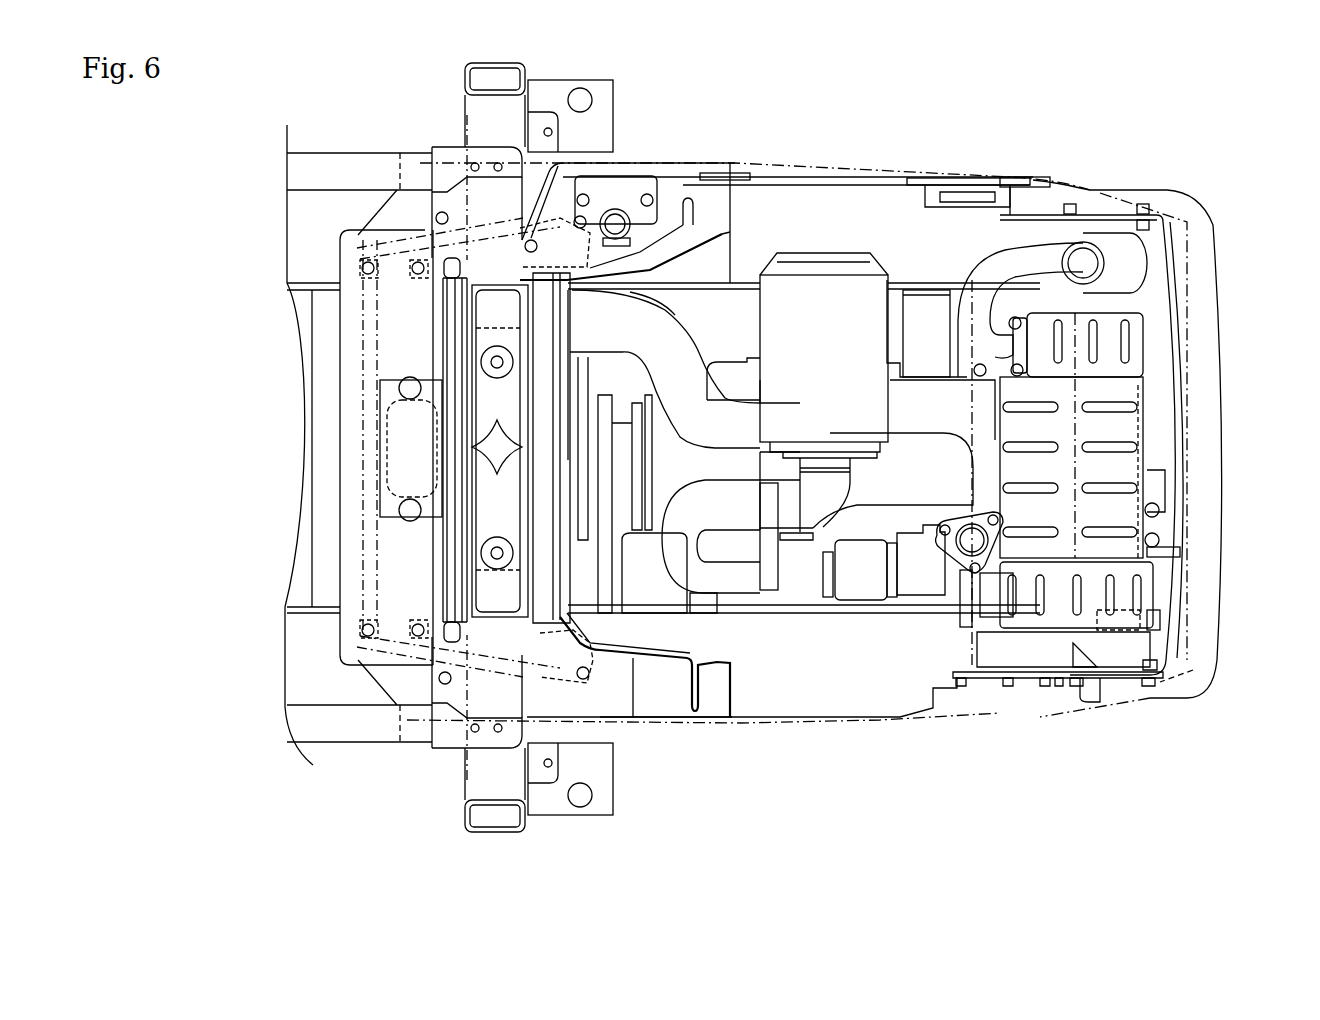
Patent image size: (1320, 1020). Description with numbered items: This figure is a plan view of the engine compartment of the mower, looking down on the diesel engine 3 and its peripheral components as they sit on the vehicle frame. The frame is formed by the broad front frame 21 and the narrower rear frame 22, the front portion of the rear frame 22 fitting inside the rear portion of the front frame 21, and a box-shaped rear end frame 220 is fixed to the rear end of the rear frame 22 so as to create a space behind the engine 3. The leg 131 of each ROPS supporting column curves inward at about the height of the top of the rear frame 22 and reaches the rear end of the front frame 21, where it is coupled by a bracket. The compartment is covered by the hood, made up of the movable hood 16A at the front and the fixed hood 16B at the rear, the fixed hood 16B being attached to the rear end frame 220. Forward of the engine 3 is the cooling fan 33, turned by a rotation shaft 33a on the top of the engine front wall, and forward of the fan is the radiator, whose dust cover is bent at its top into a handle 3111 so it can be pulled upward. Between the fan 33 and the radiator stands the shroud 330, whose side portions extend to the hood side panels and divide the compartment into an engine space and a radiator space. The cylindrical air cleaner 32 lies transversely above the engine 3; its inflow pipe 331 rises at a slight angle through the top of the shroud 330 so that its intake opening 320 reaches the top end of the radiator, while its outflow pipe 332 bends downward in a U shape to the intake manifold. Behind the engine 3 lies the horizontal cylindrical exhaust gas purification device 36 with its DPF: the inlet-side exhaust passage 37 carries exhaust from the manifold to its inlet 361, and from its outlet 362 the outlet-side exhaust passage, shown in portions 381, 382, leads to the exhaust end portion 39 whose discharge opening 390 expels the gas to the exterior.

The leg 131 is at (475, 122).
The front frame 21 is at (300, 186).
The shroud 330 is at (655, 255).
The movable hood 16A is at (787, 175).
The fixed hood 16B is at (1060, 185).
The rear frame 22 is at (725, 283).
The air cleaner 32 is at (822, 283).
The exhaust pipe 381 is at (990, 285).
The exhaust pipe drum 382 is at (1133, 303).
The outlet 362 is at (1027, 340).
The inflow pipe 331 is at (663, 317).
The engine 3 is at (738, 368).
The intake opening 320 is at (545, 320).
The cooling fan 33 is at (593, 372).
The rotation shaft 33a is at (592, 433).
The handle 3111 is at (460, 462).
The outflow pipe 332 is at (722, 590).
The inlet-side exhaust passage 37 is at (925, 600).
The inlet 361 is at (947, 607).
The exhaust gas purification device 36 is at (1130, 467).
The exhaust end portion 39 is at (1130, 542).
The discharge opening 390 is at (1157, 583).
The rear end frame 220 is at (1115, 672).